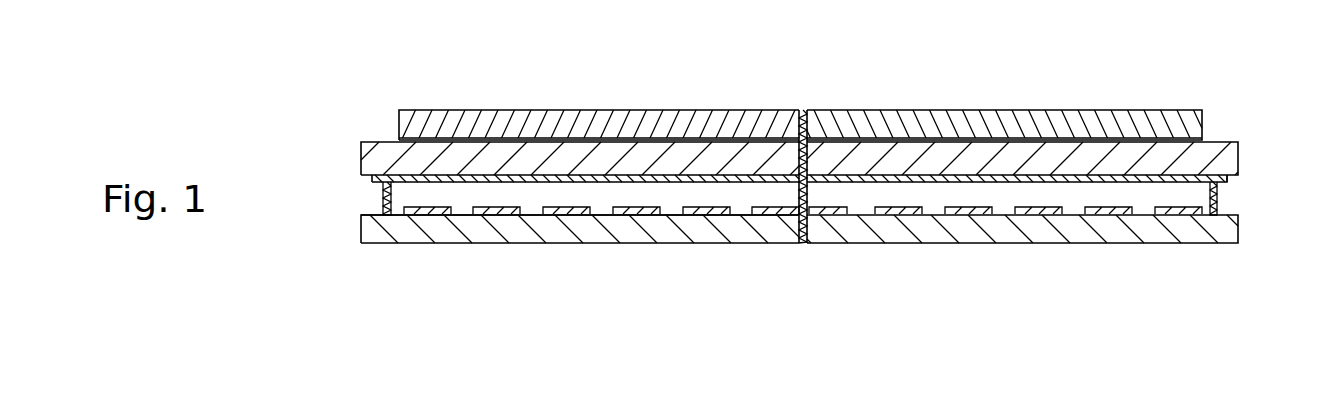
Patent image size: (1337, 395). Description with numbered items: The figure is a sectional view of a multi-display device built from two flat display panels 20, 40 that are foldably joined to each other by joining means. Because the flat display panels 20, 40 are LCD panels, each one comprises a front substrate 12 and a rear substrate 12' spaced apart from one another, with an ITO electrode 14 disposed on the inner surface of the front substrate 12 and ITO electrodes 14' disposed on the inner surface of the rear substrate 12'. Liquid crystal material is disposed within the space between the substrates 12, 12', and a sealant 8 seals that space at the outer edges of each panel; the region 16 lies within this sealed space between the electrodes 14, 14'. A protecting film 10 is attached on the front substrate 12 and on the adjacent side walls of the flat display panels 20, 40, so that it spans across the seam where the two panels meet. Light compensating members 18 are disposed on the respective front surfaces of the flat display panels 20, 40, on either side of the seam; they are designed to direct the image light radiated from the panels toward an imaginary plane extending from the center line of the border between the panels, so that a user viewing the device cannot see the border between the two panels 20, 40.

The flat display panel 20 is at (371, 121).
The flat display panel 40 is at (1215, 132).
The protecting film 10 is at (426, 110).
The front substrate 12 is at (818, 160).
The rear substrate 12' is at (810, 228).
The ITO electrode 14 is at (801, 113).
The ITO electrode 14' is at (803, 262).
The discharge space 16 is at (535, 196).
The light compensating member 18 is at (673, 122).
The sealant 8 is at (1220, 195).